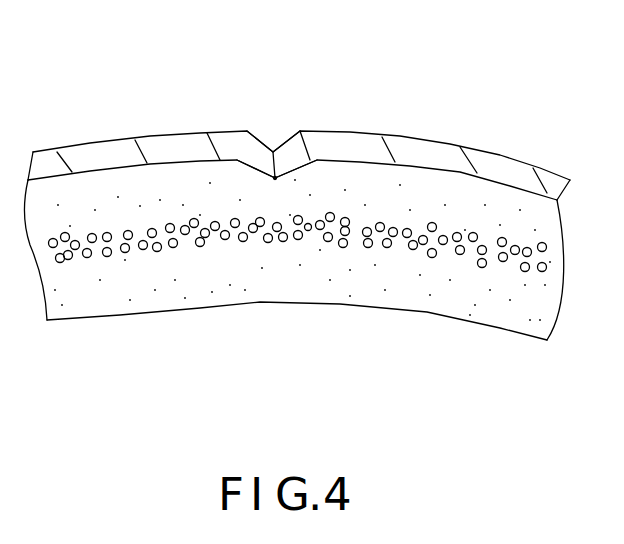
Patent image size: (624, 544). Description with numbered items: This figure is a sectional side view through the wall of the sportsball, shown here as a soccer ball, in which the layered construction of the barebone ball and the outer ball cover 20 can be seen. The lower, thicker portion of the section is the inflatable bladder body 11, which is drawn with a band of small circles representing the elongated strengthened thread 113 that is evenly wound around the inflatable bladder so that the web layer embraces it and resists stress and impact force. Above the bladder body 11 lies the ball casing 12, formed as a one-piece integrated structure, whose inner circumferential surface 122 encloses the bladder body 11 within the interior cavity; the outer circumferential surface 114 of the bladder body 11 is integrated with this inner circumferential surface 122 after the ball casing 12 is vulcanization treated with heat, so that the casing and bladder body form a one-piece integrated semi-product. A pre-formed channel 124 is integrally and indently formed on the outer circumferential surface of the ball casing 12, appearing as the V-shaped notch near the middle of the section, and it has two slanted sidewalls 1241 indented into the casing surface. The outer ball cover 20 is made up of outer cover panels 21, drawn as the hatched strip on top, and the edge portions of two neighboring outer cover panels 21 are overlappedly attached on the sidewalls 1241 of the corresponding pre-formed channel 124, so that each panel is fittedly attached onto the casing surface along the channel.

The outer ball cover 20 is at (366, 99).
The outer cover panel 21 is at (98, 162).
The ball casing 12 is at (433, 195).
The outer circumferential surface of the bladder body 114 is at (182, 162).
The pre-formed channel 124 is at (277, 140).
The slanted sidewall 1241 is at (255, 179).
The inflatable bladder body 11 is at (202, 273).
The inner circumferential surface 122 is at (88, 173).
The elongated strengthened thread 113 is at (433, 257).